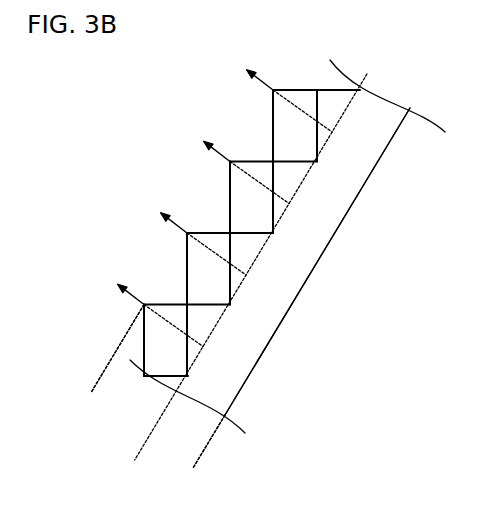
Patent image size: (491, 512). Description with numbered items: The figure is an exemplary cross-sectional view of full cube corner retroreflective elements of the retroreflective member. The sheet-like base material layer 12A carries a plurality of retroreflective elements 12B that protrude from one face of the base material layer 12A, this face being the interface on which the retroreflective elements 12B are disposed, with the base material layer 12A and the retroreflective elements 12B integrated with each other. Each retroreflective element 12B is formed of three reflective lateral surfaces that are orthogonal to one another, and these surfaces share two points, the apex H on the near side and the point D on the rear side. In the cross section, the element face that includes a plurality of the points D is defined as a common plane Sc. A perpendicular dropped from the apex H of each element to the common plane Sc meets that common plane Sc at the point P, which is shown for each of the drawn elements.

The retroreflective element 12B is at (162, 416).
The base material layer 12A is at (208, 444).
The apex H is at (239, 220).
The point P is at (251, 267).
The point D is at (263, 242).
The common plane Sc is at (268, 270).